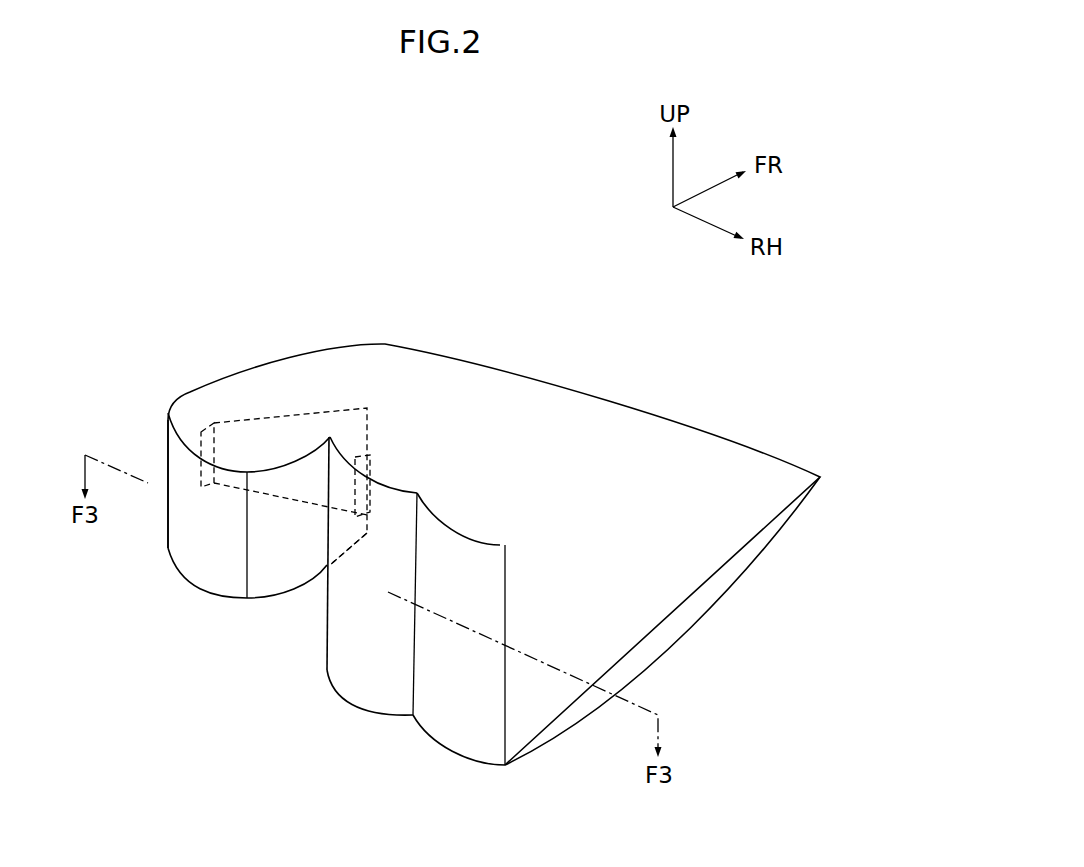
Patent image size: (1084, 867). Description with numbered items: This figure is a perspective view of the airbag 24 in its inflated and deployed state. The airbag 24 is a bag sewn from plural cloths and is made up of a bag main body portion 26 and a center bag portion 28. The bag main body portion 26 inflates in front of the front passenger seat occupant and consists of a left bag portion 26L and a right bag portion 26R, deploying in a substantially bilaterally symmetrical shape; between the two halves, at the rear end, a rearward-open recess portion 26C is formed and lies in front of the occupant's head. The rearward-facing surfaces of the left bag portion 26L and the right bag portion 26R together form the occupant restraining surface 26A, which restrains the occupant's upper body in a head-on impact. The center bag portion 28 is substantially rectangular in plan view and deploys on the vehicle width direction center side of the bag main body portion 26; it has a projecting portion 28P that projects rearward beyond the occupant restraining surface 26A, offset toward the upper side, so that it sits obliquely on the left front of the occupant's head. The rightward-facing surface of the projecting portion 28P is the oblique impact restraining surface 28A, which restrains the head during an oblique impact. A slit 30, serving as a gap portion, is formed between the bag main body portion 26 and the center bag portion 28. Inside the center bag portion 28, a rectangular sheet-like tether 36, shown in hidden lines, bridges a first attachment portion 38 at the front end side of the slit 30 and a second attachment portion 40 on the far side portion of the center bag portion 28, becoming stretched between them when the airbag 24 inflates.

The airbag 24 is at (708, 402).
The bag main body portion 26 is at (419, 539).
The left bag portion 26L is at (427, 433).
The right bag portion 26R is at (508, 477).
The occupant restraining surface 26A is at (348, 642).
The recess portion 26C is at (412, 683).
The center bag portion 28 is at (215, 465).
The oblique impact restraining surface 28A is at (263, 548).
The projecting portion 28P is at (193, 538).
The slit 30 is at (317, 540).
The tether 36 is at (288, 444).
The first attachment portion 38 is at (380, 455).
The second attachment portion 40 is at (200, 425).